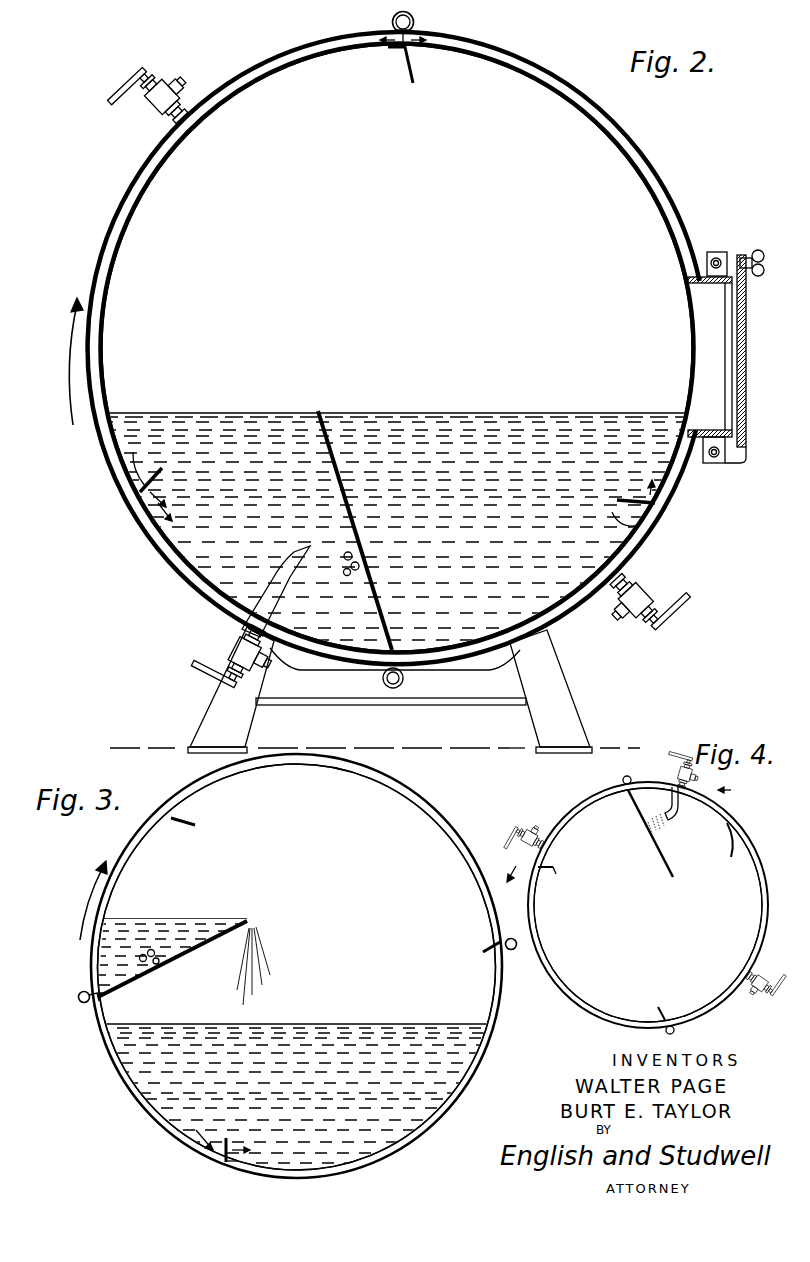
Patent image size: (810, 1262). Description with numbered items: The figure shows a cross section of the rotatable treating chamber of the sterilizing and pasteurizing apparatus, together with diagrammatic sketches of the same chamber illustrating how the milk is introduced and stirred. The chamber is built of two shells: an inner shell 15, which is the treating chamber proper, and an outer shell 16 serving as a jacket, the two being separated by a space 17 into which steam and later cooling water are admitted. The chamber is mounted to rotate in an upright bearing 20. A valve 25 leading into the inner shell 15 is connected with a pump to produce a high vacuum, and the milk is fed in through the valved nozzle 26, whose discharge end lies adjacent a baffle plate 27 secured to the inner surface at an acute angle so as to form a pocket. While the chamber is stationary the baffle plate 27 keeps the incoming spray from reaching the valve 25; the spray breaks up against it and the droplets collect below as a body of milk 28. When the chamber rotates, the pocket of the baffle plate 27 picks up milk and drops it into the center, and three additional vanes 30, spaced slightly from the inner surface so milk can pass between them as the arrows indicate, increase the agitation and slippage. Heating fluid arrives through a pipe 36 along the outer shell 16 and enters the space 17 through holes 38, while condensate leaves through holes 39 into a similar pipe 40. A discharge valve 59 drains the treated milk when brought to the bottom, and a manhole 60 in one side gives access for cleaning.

In FIG. 2, the inner shell 15 is at (612, 144).
In FIG. 3, the inner shell 15 is at (428, 806).
In FIG. 4, the inner shell 15 is at (588, 1004).
In FIG. 2, the outer shell 16 is at (664, 182).
In FIG. 3, the outer shell 16 is at (437, 828).
In FIG. 4, the outer shell 16 is at (574, 1000).
In FIG. 2, the space 17 is at (672, 211).
In FIG. 3, the space 17 is at (456, 833).
In FIG. 4, the space 17 is at (600, 1015).
In FIG. 2, the upright bearing 20 is at (552, 677).
In FIG. 3, the upright bearing 20 is at (372, 1018).
In FIG. 2, the valve 25 is at (632, 606).
In FIG. 4, the valve 25 is at (540, 826).
In FIG. 2, the valved nozzle 26 is at (250, 623).
In FIG. 4, the valved nozzle 26 is at (674, 773).
In FIG. 2, the baffle plate 27 is at (329, 444).
In FIG. 3, the baffle plate 27 is at (190, 948).
In FIG. 4, the baffle plate 27 is at (659, 856).
In FIG. 2, the body of milk 28 is at (448, 418).
In FIG. 3, the body of milk 28 is at (218, 903).
In FIG. 2, the vanes 30 is at (410, 82).
In FIG. 3, the vanes 30 is at (190, 822).
In FIG. 4, the vanes 30 is at (554, 869).
In FIG. 2, the pipe 36 is at (415, 20).
In FIG. 4, the pipe 36 is at (676, 1032).
In FIG. 2, the holes 38 is at (408, 45).
In FIG. 3, the holes 38 is at (505, 950).
In FIG. 3, the holes 39 is at (95, 1006).
In FIG. 2, the pipe 40 is at (390, 689).
In FIG. 3, the pipe 40 is at (80, 1001).
In FIG. 4, the pipe 40 is at (623, 780).
In FIG. 2, the discharge valve 59 is at (168, 92).
In FIG. 4, the discharge valve 59 is at (753, 990).
In FIG. 2, the manhole 60 is at (742, 358).